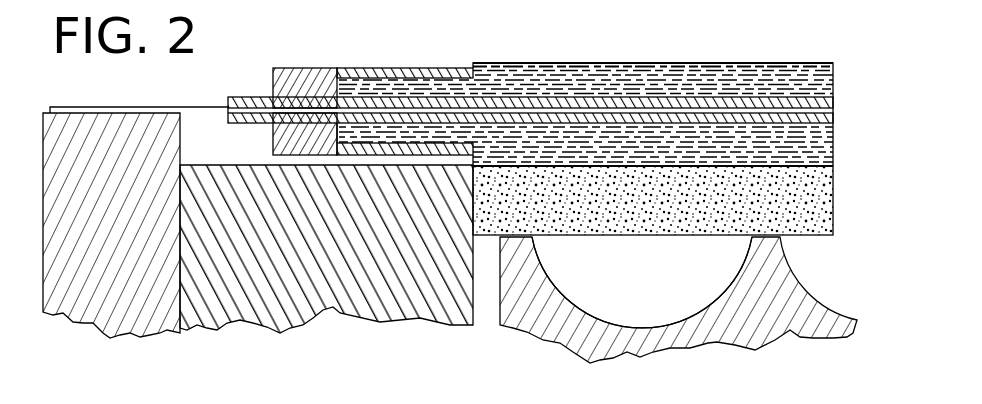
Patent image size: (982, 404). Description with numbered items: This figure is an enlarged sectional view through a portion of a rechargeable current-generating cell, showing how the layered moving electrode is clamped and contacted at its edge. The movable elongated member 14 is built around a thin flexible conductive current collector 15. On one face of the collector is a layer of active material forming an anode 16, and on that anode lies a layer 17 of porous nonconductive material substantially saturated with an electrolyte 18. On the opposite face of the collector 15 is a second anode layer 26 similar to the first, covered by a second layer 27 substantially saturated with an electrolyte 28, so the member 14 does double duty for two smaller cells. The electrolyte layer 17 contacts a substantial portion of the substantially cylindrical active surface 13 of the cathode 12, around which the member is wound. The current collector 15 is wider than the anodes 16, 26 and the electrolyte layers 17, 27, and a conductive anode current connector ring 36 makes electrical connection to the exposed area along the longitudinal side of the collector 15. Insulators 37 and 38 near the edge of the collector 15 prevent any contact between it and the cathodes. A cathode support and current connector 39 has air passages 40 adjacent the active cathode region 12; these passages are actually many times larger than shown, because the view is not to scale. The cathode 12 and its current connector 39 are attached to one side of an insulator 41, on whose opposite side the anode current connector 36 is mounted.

The cathode 12 is at (658, 208).
The active surface 13 is at (532, 168).
The movable elongated member 14 is at (531, 48).
The conductive current collector 15 is at (213, 107).
The anode 16 is at (833, 120).
The layer of porous nonconductive material 17 is at (833, 145).
The electrolyte 18 is at (630, 153).
The second anode layer 26 is at (833, 100).
The second layer 27 is at (833, 76).
The electrolyte 28 is at (630, 89).
The anode current connector ring 36 is at (120, 223).
The insulator 37 is at (273, 84).
The insulator 38 is at (273, 138).
The cathode support and current connector 39 is at (545, 290).
The air passages 40 is at (645, 292).
The insulator 41 is at (325, 251).